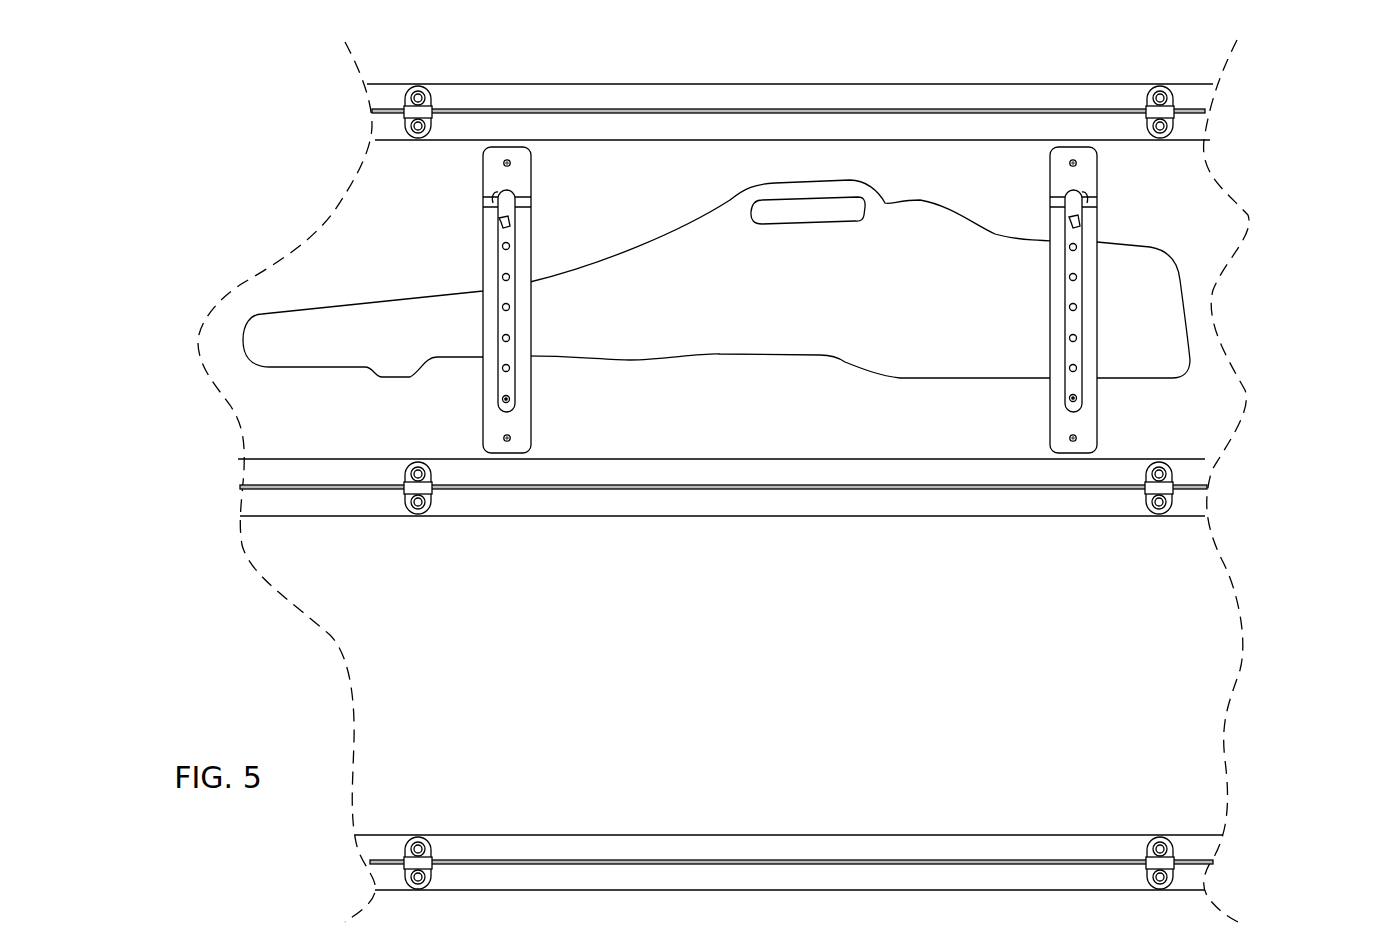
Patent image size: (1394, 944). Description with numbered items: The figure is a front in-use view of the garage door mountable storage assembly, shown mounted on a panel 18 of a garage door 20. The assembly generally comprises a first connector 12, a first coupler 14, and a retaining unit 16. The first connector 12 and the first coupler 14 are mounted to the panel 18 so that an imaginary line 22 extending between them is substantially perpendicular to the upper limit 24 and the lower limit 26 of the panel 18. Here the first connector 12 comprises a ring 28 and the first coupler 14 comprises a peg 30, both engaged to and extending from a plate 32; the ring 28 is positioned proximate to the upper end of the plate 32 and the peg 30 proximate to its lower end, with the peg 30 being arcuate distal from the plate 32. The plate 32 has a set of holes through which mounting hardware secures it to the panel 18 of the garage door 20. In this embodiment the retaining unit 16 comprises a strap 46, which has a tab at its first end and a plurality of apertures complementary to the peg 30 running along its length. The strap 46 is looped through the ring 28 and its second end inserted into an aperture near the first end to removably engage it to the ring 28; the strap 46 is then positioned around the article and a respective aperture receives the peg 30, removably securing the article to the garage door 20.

The first connector 12 is at (1202, 300).
The first coupler 14 is at (1209, 301).
The retaining unit 16 is at (1097, 257).
The panel 18 is at (1186, 440).
The garage door 20 is at (969, 81).
The imaginary line 22 is at (1100, 289).
The upper limit 24 is at (778, 124).
The lower limit 26 is at (841, 470).
The ring 28 is at (396, 226).
The peg 30 is at (481, 405).
The plate 32 is at (1090, 424).
The strap 46 is at (522, 235).